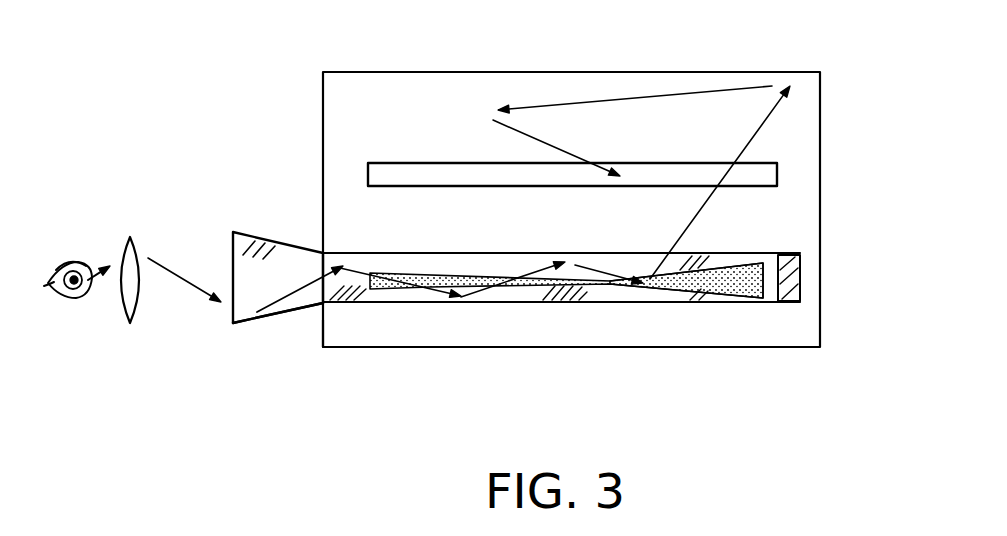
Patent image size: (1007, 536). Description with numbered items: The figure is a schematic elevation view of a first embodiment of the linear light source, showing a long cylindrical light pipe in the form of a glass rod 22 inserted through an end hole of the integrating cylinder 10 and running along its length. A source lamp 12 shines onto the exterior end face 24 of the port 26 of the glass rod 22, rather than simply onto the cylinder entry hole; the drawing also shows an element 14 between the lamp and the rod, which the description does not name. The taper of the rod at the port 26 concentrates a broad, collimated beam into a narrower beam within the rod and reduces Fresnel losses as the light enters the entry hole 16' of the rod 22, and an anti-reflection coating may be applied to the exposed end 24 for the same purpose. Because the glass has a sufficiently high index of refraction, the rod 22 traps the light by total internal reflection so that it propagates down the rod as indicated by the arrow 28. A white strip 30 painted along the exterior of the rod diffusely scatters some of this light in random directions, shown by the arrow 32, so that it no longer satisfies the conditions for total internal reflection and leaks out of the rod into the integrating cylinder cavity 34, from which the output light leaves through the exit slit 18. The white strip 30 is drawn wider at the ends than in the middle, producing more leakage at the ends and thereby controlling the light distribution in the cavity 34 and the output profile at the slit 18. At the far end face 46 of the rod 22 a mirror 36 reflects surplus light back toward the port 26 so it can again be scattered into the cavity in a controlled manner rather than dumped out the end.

The cylinder 10 is at (350, 351).
The source lamp 12 is at (74, 260).
The lens 14 is at (128, 317).
The entry hole 16' is at (287, 246).
The exit slit 18 is at (377, 168).
The glass rod 22 is at (663, 304).
The exterior end face 24 is at (233, 247).
The port 26 is at (276, 338).
The arrow indicating light propagation 28 is at (417, 289).
The white strip 30 is at (600, 284).
The arrow indicating scattered light 32 is at (771, 116).
The integrating cylinder cavity 34 is at (393, 82).
The mirror 36 is at (793, 288).
The far end face 46 is at (777, 302).